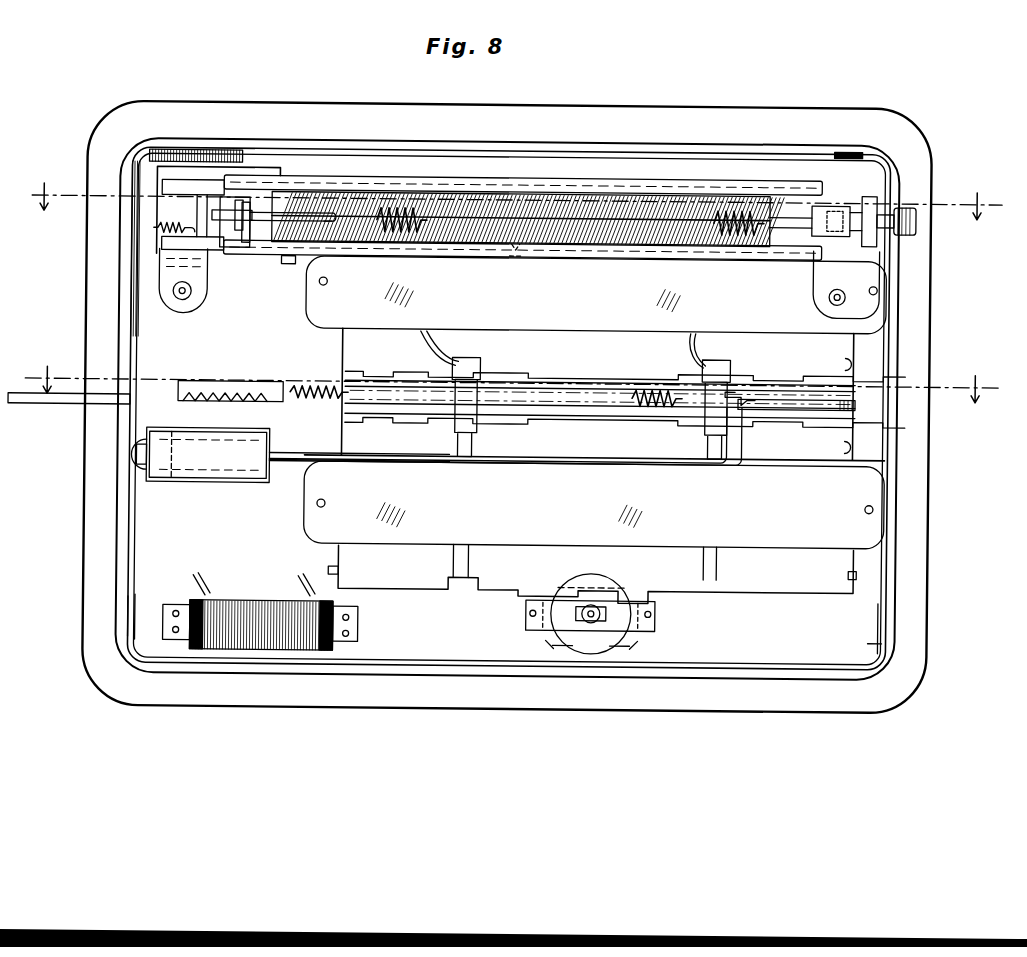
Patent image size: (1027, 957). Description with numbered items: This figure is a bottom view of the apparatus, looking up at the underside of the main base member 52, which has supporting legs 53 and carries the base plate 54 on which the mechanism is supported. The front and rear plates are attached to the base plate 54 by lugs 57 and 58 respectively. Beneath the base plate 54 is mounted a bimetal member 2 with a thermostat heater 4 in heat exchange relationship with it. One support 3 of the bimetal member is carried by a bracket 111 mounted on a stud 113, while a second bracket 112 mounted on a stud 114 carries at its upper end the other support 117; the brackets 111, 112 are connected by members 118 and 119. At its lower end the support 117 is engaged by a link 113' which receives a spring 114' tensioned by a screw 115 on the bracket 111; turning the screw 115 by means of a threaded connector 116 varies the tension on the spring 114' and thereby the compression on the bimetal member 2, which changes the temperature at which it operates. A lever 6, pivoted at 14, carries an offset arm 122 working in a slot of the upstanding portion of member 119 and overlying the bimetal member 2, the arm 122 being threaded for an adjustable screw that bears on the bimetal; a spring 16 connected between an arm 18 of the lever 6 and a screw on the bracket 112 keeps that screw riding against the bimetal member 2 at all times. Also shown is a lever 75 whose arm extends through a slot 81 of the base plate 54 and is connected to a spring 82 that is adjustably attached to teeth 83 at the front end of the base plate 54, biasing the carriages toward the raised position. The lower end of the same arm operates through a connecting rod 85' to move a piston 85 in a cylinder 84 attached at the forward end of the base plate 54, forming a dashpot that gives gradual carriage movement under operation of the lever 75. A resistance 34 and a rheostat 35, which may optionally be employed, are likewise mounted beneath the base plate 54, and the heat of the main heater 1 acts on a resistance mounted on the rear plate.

The main heater 1 is at (515, 197).
The bimetal member 2 is at (660, 205).
The support of the bimetal member 3 is at (512, 377).
The thermostat heater 4 is at (553, 204).
The lever 6 is at (505, 265).
The pivot 14 is at (290, 268).
The spring 16 is at (182, 236).
The arm of lever 18 is at (150, 262).
The resistance 34 is at (262, 602).
The rheostat 35 is at (590, 592).
The main base member 52 is at (922, 480).
The supporting legs 53 is at (172, 150).
The base plate 54 is at (135, 528).
The lug 57 is at (330, 573).
The lug 58 is at (852, 580).
The lever 75 is at (752, 400).
The slot 81 is at (843, 397).
The spring 82 is at (642, 386).
The teeth 83 is at (216, 392).
The cylinder 84 is at (236, 486).
The piston 85 is at (162, 472).
The connecting rod 85' is at (359, 440).
The bracket 111 is at (826, 284).
The bracket 112 is at (198, 292).
The stud 113 is at (813, 310).
The link 113' is at (293, 185).
The stud 114 is at (165, 308).
The spring 114' is at (595, 194).
The screw 115 is at (898, 211).
The threaded connector 116 is at (836, 203).
The support of the bimetal member 117 is at (252, 260).
The member 118 is at (738, 192).
The member 119 is at (742, 260).
The offset arm 122 is at (532, 262).